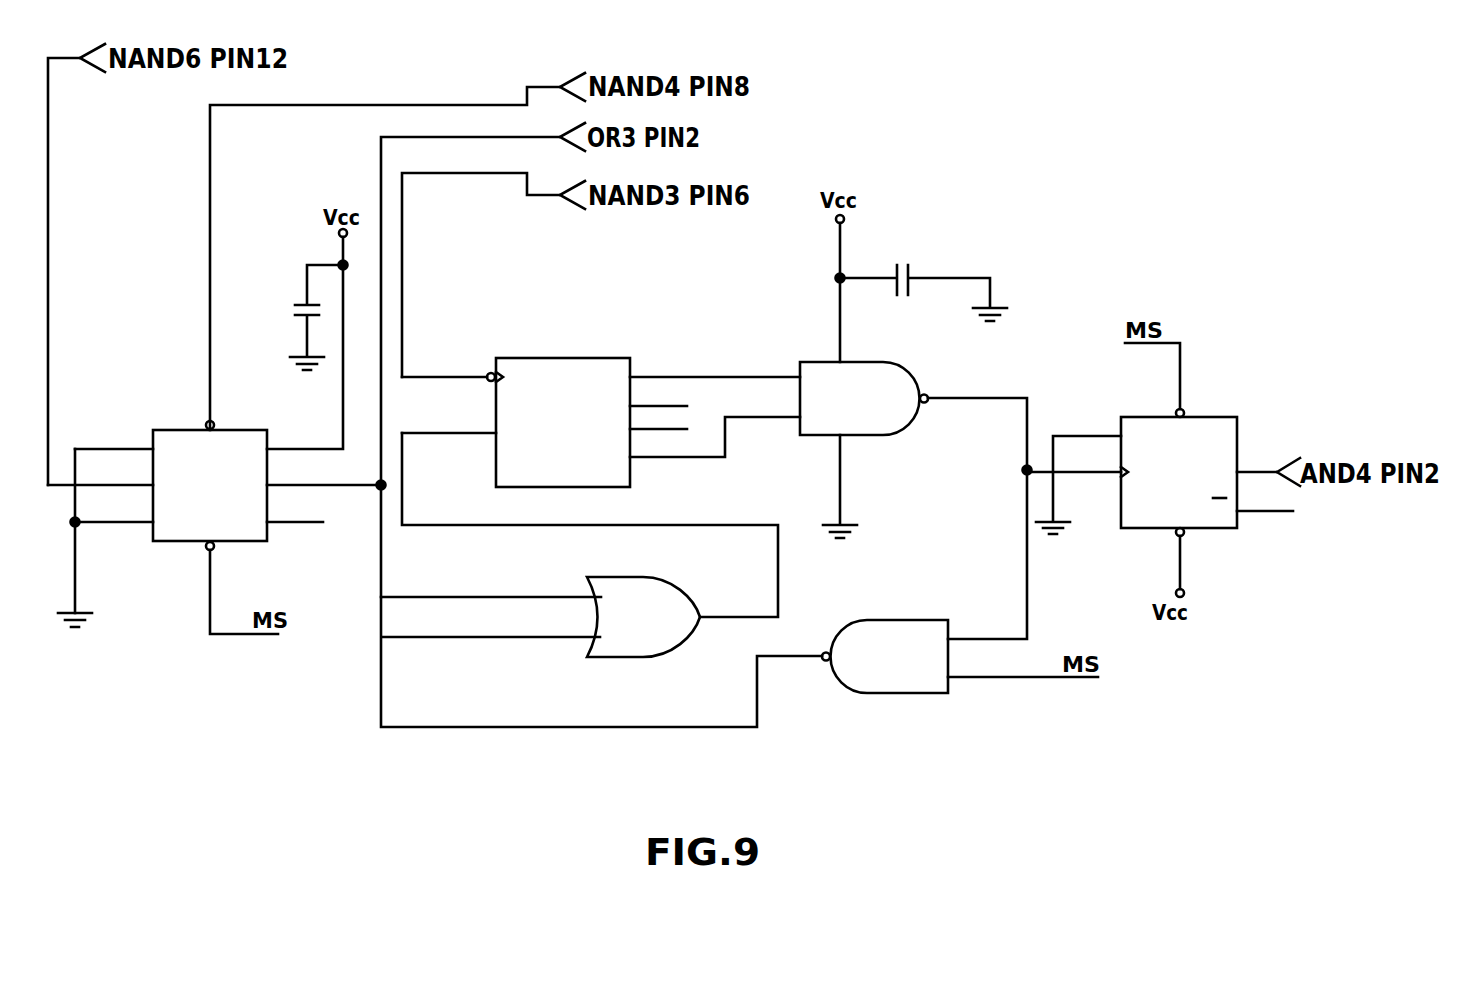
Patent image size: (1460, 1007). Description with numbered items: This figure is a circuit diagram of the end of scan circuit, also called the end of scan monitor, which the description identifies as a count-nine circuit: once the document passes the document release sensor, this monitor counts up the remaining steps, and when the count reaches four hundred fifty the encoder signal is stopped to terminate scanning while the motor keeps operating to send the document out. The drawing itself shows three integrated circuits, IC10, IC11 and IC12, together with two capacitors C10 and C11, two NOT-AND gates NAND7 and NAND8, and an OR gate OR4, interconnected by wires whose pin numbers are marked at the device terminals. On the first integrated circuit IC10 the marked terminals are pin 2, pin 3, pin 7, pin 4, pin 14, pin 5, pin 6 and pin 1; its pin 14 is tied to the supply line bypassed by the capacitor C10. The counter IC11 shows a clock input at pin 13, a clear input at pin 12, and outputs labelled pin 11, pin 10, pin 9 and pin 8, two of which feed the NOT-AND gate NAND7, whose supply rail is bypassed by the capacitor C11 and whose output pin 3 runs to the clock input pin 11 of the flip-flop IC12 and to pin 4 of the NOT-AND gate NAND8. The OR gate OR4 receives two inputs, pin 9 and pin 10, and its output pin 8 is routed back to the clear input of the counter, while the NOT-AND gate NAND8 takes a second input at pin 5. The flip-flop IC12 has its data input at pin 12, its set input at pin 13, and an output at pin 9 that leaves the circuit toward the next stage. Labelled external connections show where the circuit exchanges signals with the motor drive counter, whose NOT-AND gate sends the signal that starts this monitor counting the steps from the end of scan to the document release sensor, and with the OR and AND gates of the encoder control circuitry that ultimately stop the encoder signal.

The D-type flip-flop IC10 is at (196, 474).
The counter IC11 is at (558, 410).
The D-type flip-flop IC12 is at (1194, 459).
The capacitor C10 is at (295, 317).
The capacitor C11 is at (923, 278).
The NAND gate 7 NAND7 is at (864, 398).
The NAND gate 8 NAND8 is at (885, 656).
The OR gate 4 OR4 is at (643, 617).
The pin 1 is at (491, 496).
The pin 2 is at (433, 424).
The pin 3 is at (493, 431).
The pin 4 is at (593, 521).
The pin 5 is at (621, 570).
The pin 6 is at (295, 513).
The pin 7 is at (114, 511).
The pin 8 is at (715, 517).
The pin 9 is at (917, 503).
The pin 10 is at (622, 510).
The pin 11 is at (873, 414).
The pin 12 is at (760, 423).
The pin 13 is at (785, 456).
The pin 14 is at (305, 357).